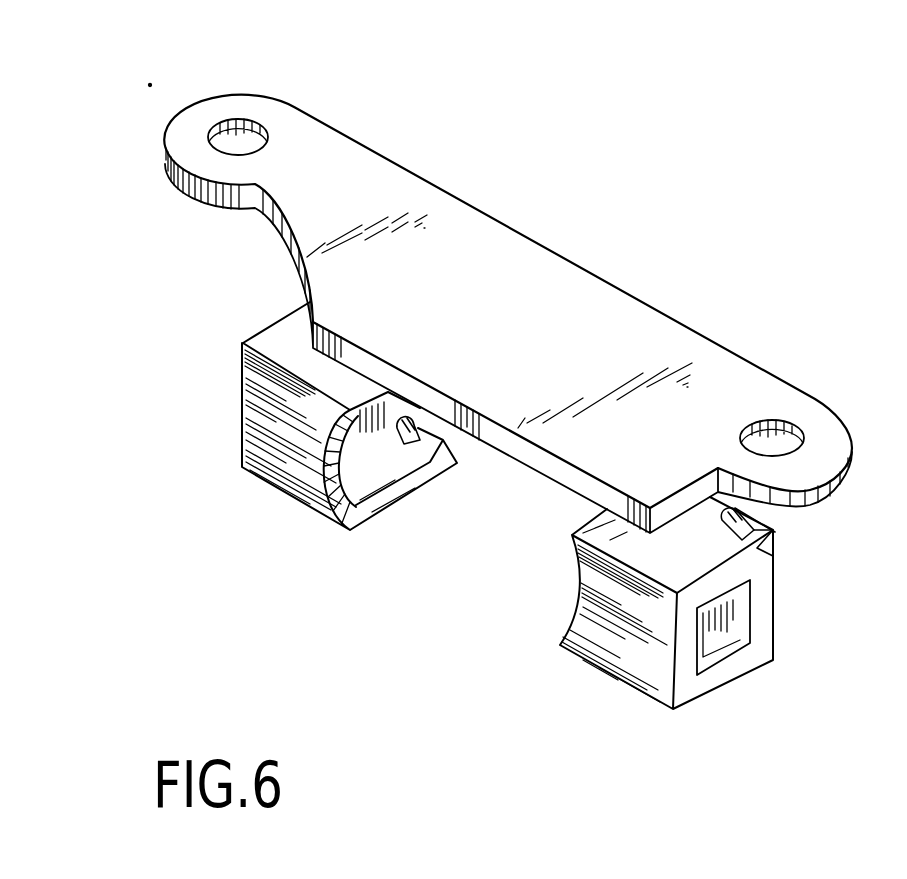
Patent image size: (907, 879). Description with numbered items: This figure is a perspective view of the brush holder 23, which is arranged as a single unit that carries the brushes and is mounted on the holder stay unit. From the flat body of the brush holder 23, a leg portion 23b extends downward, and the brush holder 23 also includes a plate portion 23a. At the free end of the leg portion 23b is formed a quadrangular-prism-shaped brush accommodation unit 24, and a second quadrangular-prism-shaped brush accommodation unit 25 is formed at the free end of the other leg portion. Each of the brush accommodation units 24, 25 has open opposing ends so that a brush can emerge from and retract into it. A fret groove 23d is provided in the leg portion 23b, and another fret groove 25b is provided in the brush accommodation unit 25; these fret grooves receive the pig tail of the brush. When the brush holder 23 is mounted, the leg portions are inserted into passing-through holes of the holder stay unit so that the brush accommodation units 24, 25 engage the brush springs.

The brush holder 23 is at (457, 133).
The flat plate portion 23a is at (563, 290).
The leg portion 23b is at (712, 508).
The fret groove 23d is at (775, 560).
The brush accommodation unit 24 is at (637, 677).
The brush accommodation unit 25 is at (290, 460).
The fret groove 25b is at (437, 447).